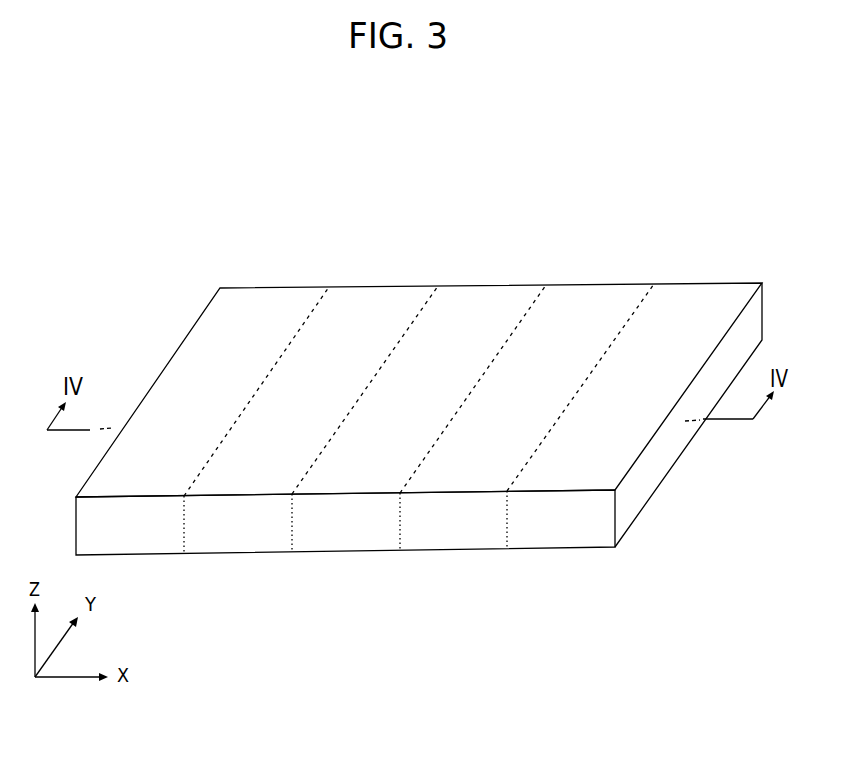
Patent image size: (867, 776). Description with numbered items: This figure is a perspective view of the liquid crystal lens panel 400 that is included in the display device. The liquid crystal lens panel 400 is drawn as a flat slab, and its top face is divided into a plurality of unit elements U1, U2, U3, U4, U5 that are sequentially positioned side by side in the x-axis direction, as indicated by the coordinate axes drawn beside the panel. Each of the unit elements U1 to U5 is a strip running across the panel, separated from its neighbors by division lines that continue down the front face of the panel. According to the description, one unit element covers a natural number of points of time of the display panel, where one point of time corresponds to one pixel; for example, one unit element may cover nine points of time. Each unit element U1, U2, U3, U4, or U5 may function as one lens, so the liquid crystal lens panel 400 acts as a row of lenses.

The liquid crystal lens panel 400 is at (385, 287).
The unit element U1 is at (256, 391).
The unit element U2 is at (365, 390).
The unit element U3 is at (473, 389).
The unit element U4 is at (580, 387).
The unit element U5 is at (688, 415).